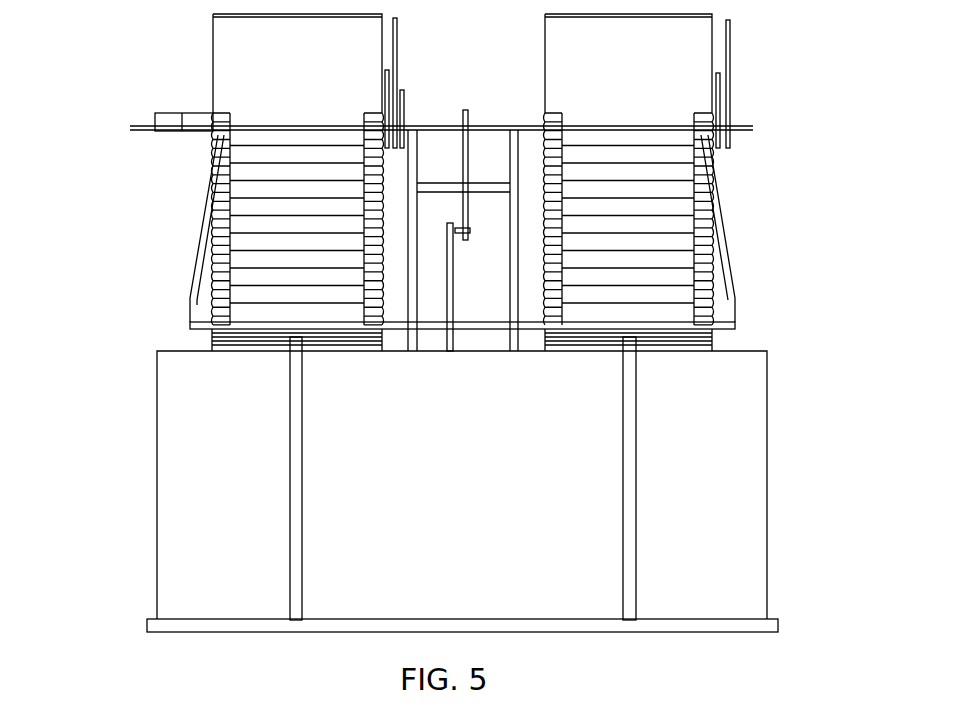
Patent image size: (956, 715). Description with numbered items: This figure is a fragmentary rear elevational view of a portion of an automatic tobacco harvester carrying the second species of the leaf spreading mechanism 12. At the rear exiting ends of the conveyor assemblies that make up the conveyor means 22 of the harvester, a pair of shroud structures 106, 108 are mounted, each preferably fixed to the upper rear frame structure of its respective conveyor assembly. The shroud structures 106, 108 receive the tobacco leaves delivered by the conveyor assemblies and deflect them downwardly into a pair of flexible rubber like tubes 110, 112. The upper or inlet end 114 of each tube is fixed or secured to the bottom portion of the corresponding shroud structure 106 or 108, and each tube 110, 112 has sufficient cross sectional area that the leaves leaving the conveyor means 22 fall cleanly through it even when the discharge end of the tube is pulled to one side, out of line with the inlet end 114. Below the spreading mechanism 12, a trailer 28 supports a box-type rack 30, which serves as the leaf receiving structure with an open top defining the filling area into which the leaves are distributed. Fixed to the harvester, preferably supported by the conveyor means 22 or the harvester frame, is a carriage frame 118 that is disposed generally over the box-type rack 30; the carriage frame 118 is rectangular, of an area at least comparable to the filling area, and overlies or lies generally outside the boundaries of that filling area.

The leaf spreading mechanism of the second species 12 is at (133, 245).
The conveyor means 22 is at (210, 340).
The trailer 28 is at (241, 622).
The box-type rack 30 is at (146, 393).
The shroud structure 106 is at (362, 52).
The shroud structure 108 is at (680, 62).
The flexible rubber like tube 110 is at (275, 190).
The flexible rubber like tube 112 is at (680, 205).
The inlet end 114 is at (272, 120).
The carriage frame 118 is at (208, 323).